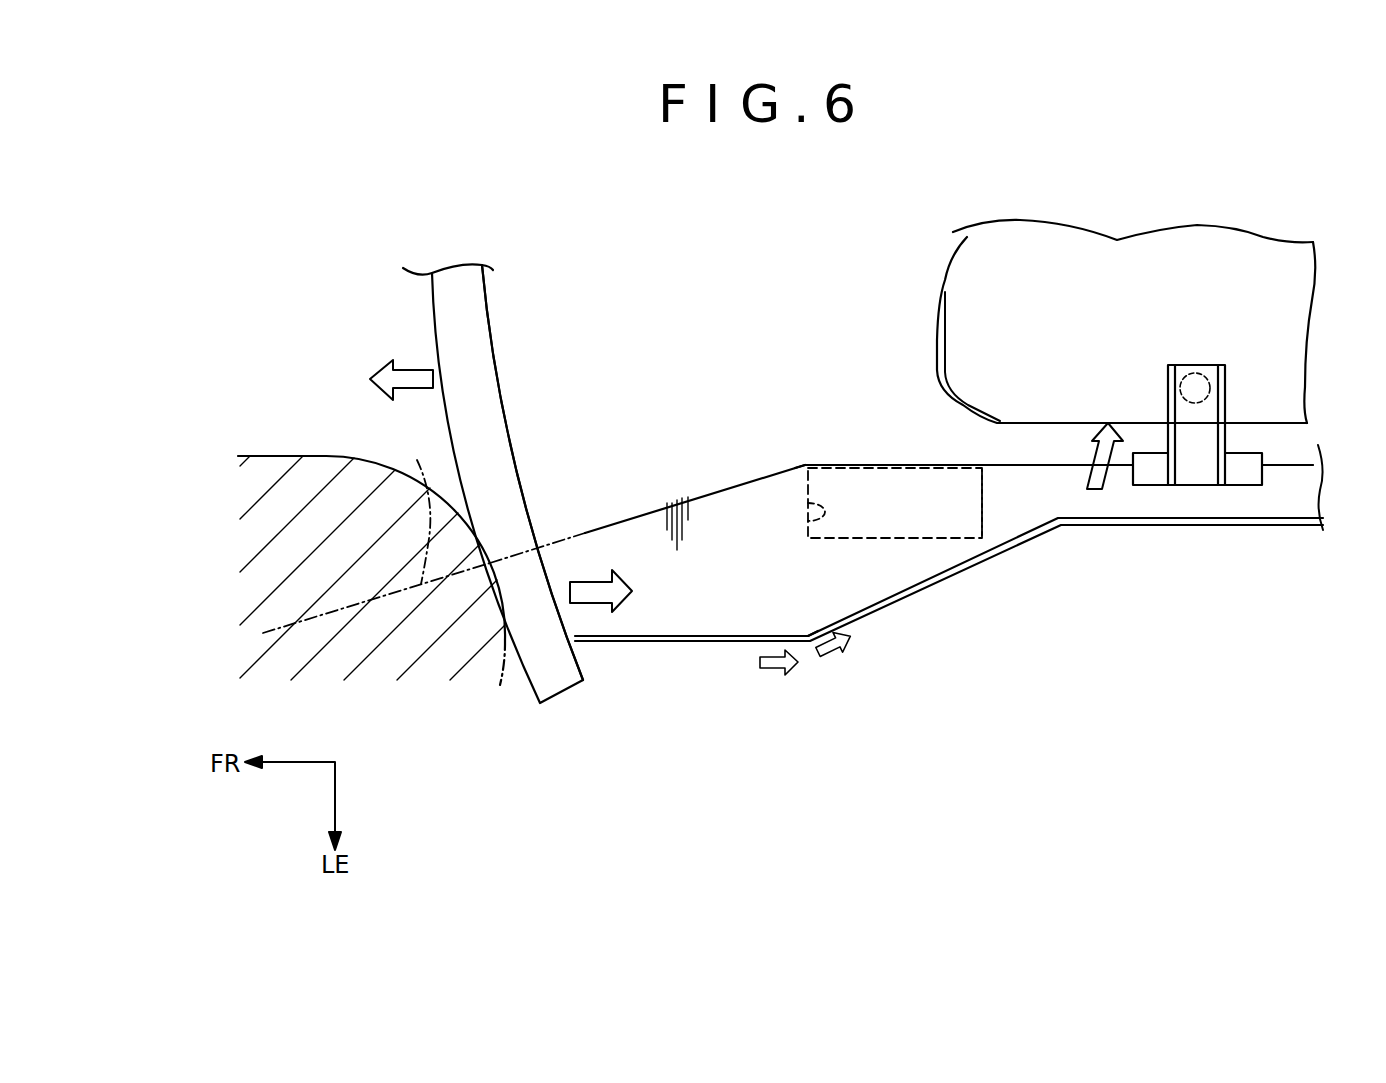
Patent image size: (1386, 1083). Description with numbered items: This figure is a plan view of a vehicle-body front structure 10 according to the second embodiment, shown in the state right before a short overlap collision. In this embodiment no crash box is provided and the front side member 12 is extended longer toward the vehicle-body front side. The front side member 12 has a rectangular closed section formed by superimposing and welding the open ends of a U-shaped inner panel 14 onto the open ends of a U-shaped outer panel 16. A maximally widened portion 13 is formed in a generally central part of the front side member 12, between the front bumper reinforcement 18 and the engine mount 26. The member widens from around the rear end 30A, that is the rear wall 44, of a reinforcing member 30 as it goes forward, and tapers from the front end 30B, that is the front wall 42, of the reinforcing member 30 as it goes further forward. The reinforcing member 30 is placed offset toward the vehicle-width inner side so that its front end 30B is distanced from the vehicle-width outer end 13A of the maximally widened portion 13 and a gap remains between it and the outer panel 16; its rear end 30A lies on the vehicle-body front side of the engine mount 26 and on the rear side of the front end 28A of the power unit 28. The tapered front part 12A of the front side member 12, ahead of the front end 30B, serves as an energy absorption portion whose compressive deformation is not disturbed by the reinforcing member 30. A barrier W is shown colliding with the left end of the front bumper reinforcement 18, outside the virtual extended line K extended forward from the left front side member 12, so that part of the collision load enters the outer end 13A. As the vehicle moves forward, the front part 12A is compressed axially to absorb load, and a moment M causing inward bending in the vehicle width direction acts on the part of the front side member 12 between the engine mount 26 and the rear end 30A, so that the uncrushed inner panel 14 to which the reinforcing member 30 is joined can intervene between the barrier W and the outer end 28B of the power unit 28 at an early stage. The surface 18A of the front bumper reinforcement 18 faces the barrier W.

The vehicle-body front structure 10 is at (761, 416).
The front side member 12 is at (1157, 538).
The front part 12A is at (617, 532).
The maximally widened portion 13 is at (811, 451).
The vehicle-width outer end 13A is at (808, 643).
The inner panel 14 is at (1301, 447).
The outer panel 16 is at (1215, 527).
The front bumper reinforcement 18 is at (421, 331).
The surface of wheel house member 18A is at (512, 458).
The engine mount 26 is at (1216, 405).
The power unit 28 is at (1229, 244).
The front end 28A is at (940, 345).
The outer end 28B is at (1063, 424).
The reinforcing member 30 is at (893, 540).
The rear end 30A is at (1031, 538).
The front end 30B is at (758, 538).
The front wall 42 is at (808, 518).
The rear wall 44 is at (988, 517).
The barrier W is at (316, 455).
The virtual extended line K is at (418, 509).
The moment M is at (1107, 489).